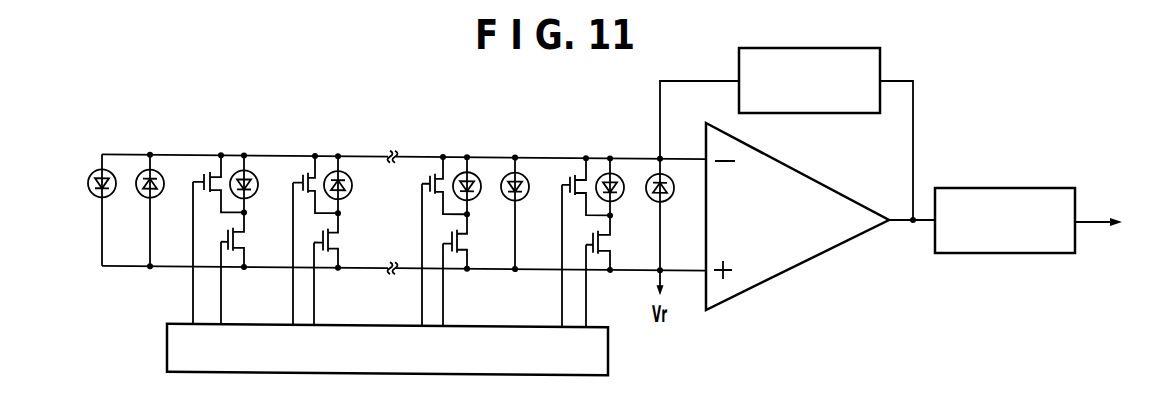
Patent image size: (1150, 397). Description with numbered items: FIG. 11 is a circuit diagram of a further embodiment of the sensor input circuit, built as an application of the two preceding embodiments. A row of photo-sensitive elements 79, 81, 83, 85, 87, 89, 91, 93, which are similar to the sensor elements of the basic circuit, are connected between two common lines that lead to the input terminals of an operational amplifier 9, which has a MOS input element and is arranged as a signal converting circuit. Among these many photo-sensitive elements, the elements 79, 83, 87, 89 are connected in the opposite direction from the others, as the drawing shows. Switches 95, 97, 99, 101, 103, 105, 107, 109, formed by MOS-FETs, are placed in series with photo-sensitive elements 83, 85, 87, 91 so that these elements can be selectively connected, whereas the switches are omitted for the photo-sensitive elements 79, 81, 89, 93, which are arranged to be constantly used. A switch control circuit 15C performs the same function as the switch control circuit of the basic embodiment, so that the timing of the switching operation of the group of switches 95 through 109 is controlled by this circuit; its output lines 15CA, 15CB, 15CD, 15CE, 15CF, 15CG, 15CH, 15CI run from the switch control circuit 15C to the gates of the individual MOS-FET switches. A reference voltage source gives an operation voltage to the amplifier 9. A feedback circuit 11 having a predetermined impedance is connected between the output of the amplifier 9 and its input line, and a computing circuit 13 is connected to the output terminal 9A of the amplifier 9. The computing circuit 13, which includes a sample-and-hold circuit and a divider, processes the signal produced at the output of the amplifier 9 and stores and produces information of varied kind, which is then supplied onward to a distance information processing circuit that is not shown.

The photo-sensitive element 79 is at (97, 194).
The photo-sensitive element 81 is at (138, 194).
The photo-sensitive element 83 is at (258, 176).
The photo-sensitive element 85 is at (352, 177).
The photo-sensitive element 87 is at (480, 178).
The photo-sensitive element 89 is at (528, 191).
The photo-sensitive element 91 is at (625, 178).
The photo-sensitive element 93 is at (673, 180).
The switch 95 is at (200, 175).
The switch 97 is at (240, 240).
The switch 99 is at (305, 196).
The switch 101 is at (335, 237).
The switch 103 is at (427, 170).
The switch 105 is at (462, 234).
The switch 107 is at (571, 169).
The switch 109 is at (602, 235).
The switch control circuit 15C is at (608, 343).
The switch control line 15CA is at (193, 322).
The switch control line 15CB is at (219, 323).
The switch control line 15CD is at (292, 322).
The switch control line 15CE is at (314, 322).
The switch control line 15CF is at (422, 322).
The switch control line 15CG is at (443, 322).
The switch control line 15CH is at (562, 322).
The switch control line 15CI is at (586, 322).
The operational amplifier 9 is at (815, 258).
The output terminal of operational amplifier 9A is at (913, 224).
The feedback circuit 11 is at (844, 113).
The computing circuit 13 is at (1028, 188).